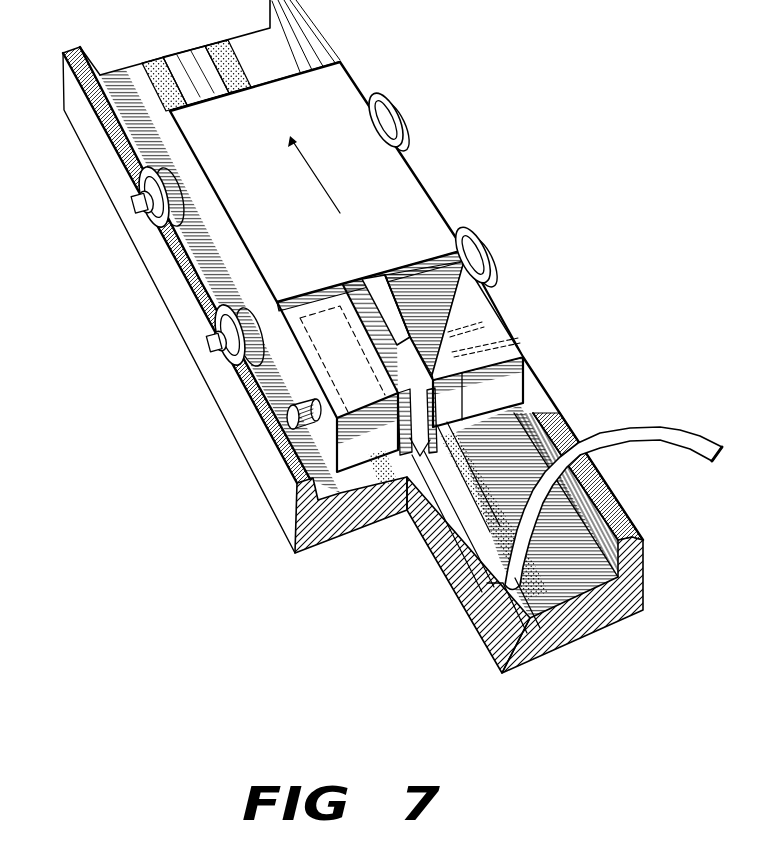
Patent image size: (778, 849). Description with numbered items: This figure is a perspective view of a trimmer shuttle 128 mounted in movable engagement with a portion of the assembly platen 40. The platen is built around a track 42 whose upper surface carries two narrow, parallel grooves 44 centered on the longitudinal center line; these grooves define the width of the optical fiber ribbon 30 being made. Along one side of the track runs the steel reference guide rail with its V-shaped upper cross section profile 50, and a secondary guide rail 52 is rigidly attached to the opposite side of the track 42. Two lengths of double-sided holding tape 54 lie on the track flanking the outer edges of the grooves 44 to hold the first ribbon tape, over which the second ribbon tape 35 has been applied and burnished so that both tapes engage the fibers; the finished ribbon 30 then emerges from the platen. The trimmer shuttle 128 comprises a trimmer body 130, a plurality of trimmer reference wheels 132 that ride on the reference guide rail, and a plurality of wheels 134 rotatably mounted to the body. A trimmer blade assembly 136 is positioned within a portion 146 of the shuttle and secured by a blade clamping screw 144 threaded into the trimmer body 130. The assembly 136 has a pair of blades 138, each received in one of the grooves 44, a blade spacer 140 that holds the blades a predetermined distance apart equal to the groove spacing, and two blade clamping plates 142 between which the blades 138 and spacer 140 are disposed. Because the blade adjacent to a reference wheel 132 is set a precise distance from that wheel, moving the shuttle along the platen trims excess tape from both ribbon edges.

The optical fiber ribbon 30 is at (668, 426).
The second ribbon tape 35 is at (178, 52).
The assembly platen 40 is at (246, 38).
The track 42 is at (154, 107).
The parallel grooves 44 is at (523, 628).
The V-shaped upper cross section profile 50 is at (86, 88).
The secondary guide rail 52 is at (632, 513).
The holding tape 54 is at (153, 62).
The trimmer shuttle 128 is at (428, 164).
The trimmer body 130 is at (428, 212).
The trimmer reference wheels 132 is at (143, 186).
The wheels 134 is at (415, 88).
The trimmer blade assembly 136 is at (470, 314).
The trimmer blades 138 is at (443, 458).
The blade spacer 140 is at (385, 283).
The blade clamping plates 142 is at (376, 339).
The blade clamping screw 144 is at (291, 419).
The trimmer shuttle portion 146 is at (466, 336).